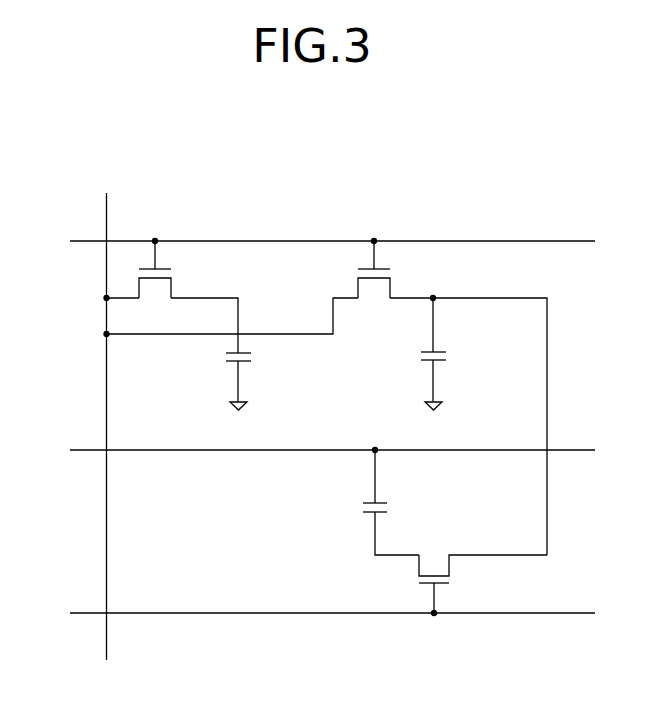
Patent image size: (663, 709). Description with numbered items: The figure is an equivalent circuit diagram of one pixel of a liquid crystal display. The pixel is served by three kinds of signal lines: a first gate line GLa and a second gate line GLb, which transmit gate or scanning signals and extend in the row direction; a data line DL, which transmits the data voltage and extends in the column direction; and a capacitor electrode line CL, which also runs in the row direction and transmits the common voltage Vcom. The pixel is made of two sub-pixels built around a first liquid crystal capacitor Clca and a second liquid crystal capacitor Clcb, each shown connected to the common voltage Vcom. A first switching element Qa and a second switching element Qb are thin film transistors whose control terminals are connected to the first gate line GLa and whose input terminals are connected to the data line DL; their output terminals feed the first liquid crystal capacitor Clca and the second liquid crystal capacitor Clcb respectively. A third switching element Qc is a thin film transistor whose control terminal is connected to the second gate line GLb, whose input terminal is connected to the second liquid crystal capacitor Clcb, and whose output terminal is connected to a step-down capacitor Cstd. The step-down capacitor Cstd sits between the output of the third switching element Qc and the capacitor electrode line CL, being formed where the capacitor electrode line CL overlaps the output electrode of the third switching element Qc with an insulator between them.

The data line DL is at (105, 416).
The first gate line GLa is at (311, 242).
The second gate line GLb is at (311, 614).
The capacitor electrode line CL is at (316, 451).
The first switching element Qa is at (171, 296).
The second switching element Qb is at (325, 397).
The third switching element Qc is at (483, 574).
The first liquid crystal capacitor Clca is at (217, 375).
The second liquid crystal capacitor Clcb is at (412, 350).
The step-down capacitor Cstd is at (396, 502).
The common voltage Vcom is at (334, 418).